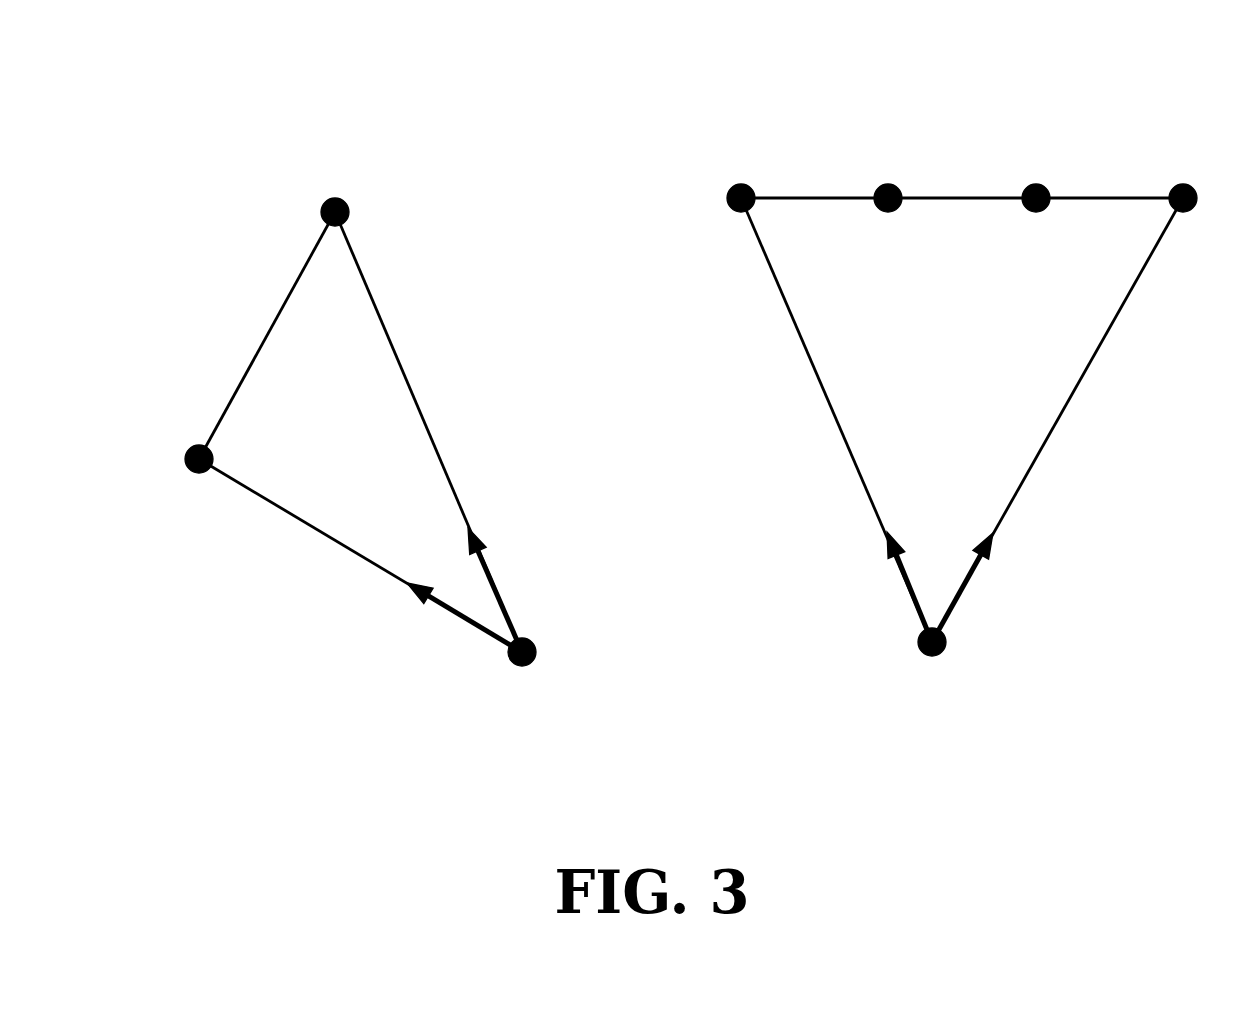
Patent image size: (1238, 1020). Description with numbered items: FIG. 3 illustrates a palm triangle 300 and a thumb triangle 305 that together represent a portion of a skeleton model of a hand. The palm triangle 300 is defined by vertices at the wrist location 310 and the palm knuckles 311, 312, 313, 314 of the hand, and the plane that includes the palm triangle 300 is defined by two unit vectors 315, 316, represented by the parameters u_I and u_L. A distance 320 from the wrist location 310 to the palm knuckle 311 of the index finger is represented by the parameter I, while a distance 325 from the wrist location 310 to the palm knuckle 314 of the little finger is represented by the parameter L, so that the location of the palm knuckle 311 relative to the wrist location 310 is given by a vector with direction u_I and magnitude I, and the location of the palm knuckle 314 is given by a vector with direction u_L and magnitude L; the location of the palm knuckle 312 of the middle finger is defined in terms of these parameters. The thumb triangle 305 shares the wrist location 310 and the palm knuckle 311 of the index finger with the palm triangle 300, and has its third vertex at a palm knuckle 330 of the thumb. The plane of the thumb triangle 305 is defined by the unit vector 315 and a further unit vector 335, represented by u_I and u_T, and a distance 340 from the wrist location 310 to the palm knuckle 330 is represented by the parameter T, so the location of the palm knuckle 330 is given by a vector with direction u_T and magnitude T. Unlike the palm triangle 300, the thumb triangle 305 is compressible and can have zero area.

The palm triangle 300 is at (951, 63).
The thumb triangle 305 is at (323, 123).
The wrist location 310 is at (526, 666).
The palm knuckle 311 is at (349, 212).
The palm knuckle 312 is at (887, 182).
The palm knuckle 313 is at (1033, 182).
The palm knuckle 314 is at (1181, 182).
The unit vector 315 is at (493, 580).
The unit vector 316 is at (966, 585).
The distance 320 is at (406, 377).
The distance 325 is at (1084, 377).
The palm knuckle 330 is at (186, 463).
The unit vector 335 is at (470, 621).
The distance 340 is at (310, 525).